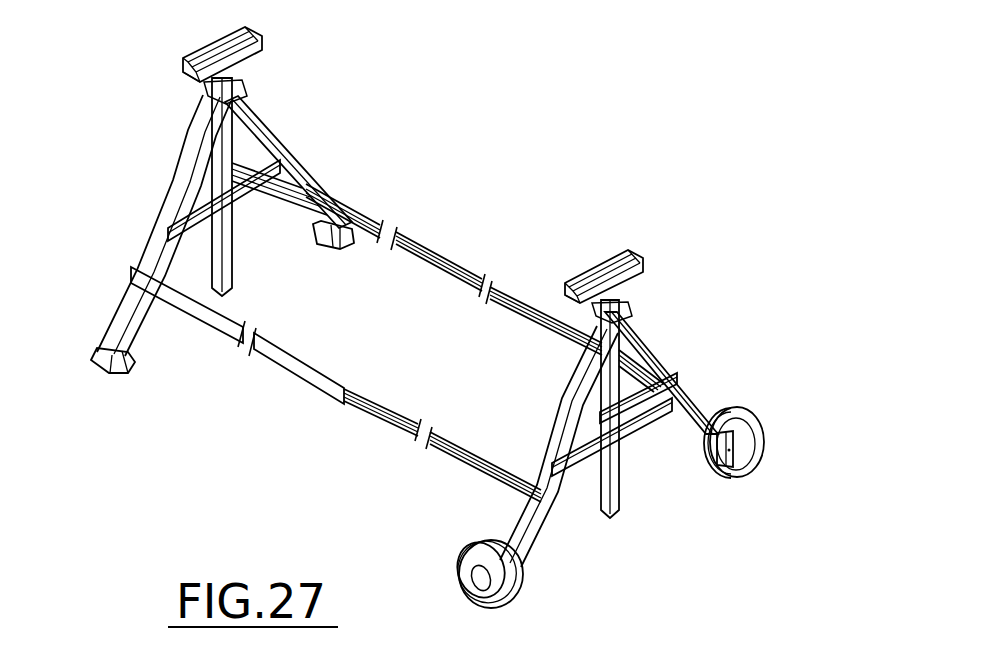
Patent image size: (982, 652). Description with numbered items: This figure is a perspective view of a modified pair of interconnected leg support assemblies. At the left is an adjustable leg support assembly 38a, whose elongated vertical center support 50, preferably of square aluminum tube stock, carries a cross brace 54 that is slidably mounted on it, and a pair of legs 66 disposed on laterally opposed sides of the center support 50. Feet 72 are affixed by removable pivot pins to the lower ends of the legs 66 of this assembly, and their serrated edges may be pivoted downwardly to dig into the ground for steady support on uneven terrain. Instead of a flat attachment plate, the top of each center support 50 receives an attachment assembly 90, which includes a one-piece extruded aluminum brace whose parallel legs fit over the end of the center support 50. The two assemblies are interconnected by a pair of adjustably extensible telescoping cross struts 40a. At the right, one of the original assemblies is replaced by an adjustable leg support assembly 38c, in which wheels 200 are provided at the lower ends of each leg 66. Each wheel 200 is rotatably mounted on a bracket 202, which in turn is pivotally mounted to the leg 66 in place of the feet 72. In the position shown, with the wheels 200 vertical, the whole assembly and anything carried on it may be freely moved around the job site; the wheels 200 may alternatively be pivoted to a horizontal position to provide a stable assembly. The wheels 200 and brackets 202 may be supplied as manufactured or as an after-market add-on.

The attachment assembly 90 is at (270, 40).
The adjustable leg support assembly 38a is at (174, 198).
The adjustable leg support assembly 38c is at (650, 346).
The feet 72 is at (120, 364).
The adjustably extensible telescoping cross struts 40a is at (460, 282).
The leg 66 is at (678, 398).
The cross brace 54 is at (652, 430).
The center support 50 is at (619, 494).
The wheel 200 is at (764, 446).
The bracket 202 is at (746, 464).